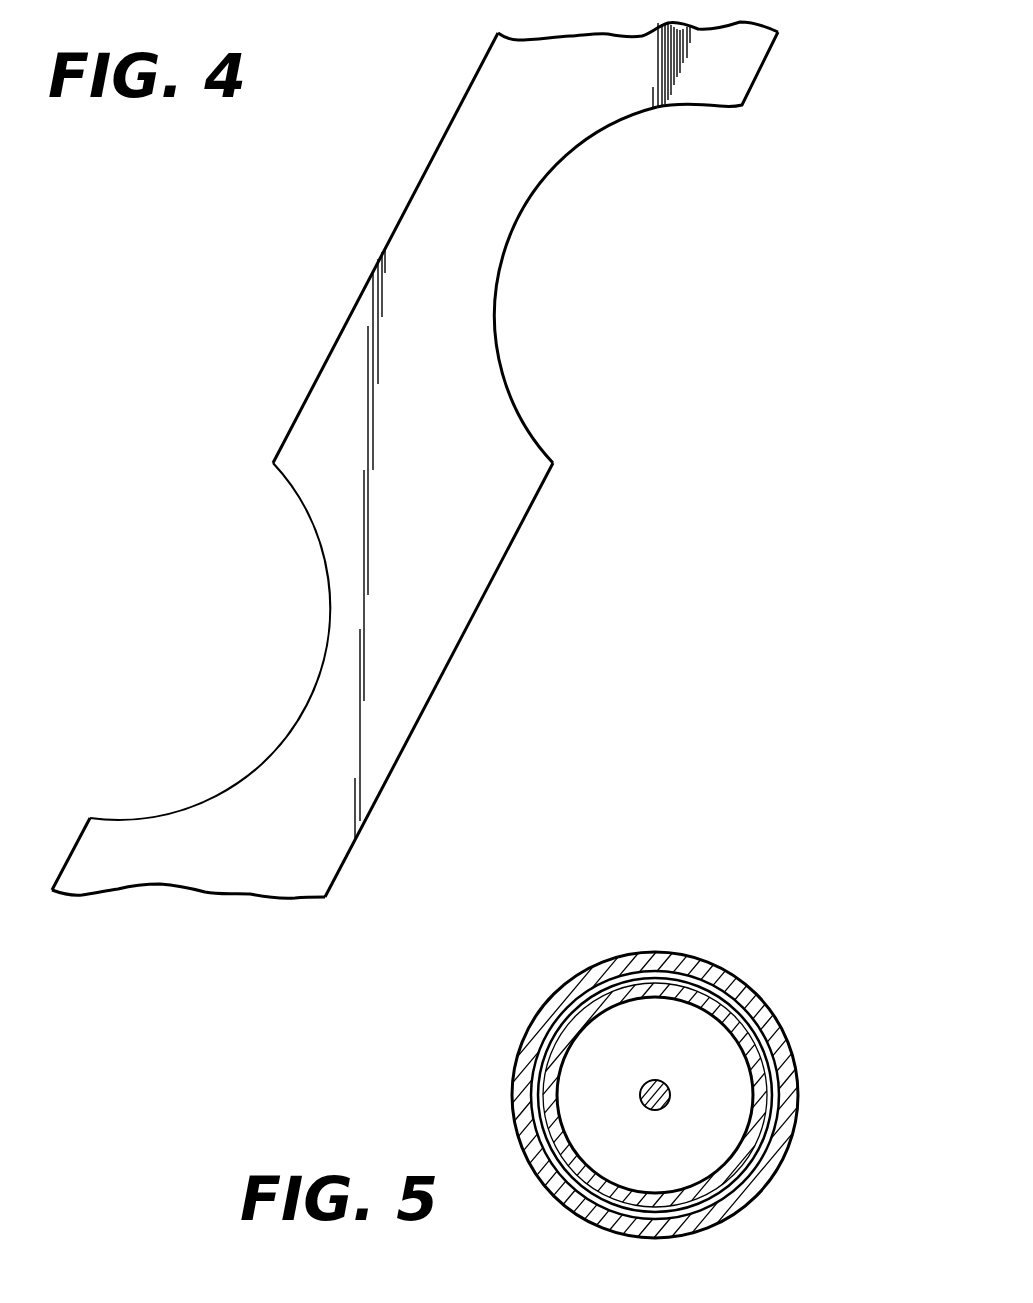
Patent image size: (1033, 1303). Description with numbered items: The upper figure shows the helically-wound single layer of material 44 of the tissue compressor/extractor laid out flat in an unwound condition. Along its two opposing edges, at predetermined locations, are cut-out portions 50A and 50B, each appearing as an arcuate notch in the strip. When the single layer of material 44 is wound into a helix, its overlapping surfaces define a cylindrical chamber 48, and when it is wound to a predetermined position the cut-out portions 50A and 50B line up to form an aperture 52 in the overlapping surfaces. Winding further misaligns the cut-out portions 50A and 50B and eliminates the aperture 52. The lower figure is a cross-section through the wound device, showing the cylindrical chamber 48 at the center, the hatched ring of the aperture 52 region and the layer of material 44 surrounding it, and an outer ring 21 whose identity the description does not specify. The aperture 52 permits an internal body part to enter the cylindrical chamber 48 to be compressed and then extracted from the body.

In FIG. 4, the helically-wound single layer of material 44 is at (480, 603).
In FIG. 5, the helically-wound single layer of material 44 is at (757, 1070).
In FIG. 4, the cut-out portion 50A is at (497, 287).
In FIG. 4, the cut-out portion 50B is at (318, 683).
In FIG. 5, the outer sheath 21 is at (790, 1137).
In FIG. 5, the cylindrical chamber 48 is at (702, 1040).
In FIG. 5, the aperture 52 is at (553, 1065).